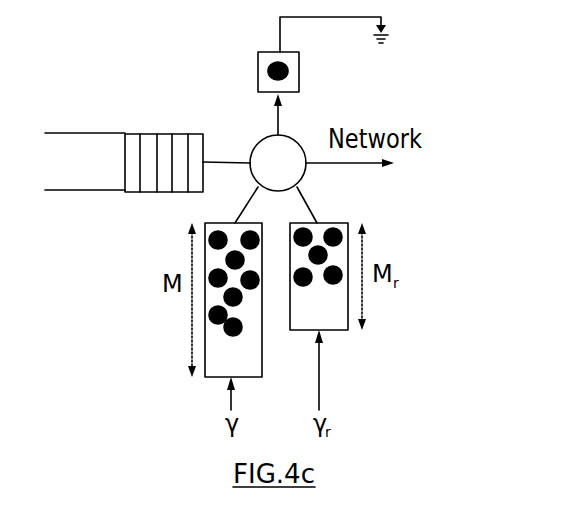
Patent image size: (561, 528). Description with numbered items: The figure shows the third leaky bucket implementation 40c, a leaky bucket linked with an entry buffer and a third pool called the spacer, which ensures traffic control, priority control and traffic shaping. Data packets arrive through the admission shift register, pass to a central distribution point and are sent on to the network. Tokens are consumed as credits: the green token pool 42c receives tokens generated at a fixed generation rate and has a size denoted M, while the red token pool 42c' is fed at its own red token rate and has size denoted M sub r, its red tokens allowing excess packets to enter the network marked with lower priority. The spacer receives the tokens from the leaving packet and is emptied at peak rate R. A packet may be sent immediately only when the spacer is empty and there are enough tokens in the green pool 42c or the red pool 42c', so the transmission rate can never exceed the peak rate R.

The optical encoder/sensor arrangement 40c is at (372, 75).
The green token pool 42c is at (206, 318).
The red token pool 42c' is at (348, 300).